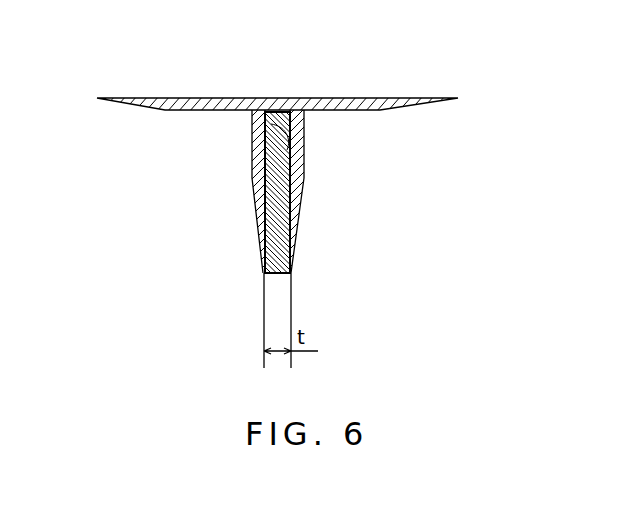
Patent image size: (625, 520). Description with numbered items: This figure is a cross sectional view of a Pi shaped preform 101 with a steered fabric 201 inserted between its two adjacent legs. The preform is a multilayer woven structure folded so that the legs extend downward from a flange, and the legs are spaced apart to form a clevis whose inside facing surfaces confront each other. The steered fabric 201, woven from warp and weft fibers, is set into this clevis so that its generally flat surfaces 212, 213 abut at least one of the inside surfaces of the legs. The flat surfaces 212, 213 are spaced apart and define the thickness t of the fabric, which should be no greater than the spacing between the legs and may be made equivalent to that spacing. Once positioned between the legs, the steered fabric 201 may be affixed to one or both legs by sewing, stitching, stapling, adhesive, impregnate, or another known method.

The substrate layer 101 is at (362, 103).
The steered fabric 201 is at (265, 185).
The generally flat surface 213 is at (263, 258).
The generally flat surface 212 is at (292, 260).